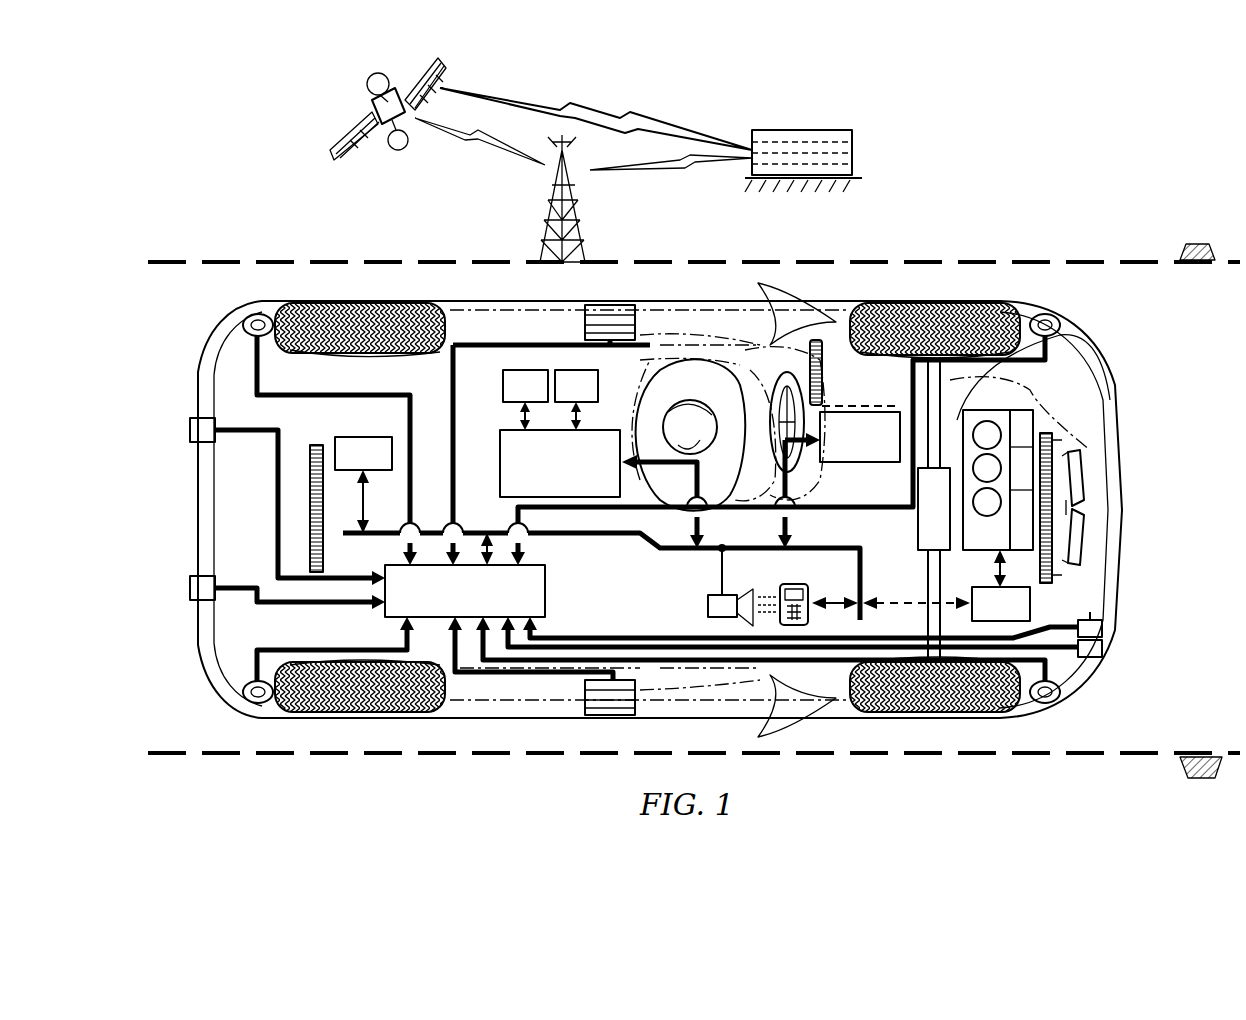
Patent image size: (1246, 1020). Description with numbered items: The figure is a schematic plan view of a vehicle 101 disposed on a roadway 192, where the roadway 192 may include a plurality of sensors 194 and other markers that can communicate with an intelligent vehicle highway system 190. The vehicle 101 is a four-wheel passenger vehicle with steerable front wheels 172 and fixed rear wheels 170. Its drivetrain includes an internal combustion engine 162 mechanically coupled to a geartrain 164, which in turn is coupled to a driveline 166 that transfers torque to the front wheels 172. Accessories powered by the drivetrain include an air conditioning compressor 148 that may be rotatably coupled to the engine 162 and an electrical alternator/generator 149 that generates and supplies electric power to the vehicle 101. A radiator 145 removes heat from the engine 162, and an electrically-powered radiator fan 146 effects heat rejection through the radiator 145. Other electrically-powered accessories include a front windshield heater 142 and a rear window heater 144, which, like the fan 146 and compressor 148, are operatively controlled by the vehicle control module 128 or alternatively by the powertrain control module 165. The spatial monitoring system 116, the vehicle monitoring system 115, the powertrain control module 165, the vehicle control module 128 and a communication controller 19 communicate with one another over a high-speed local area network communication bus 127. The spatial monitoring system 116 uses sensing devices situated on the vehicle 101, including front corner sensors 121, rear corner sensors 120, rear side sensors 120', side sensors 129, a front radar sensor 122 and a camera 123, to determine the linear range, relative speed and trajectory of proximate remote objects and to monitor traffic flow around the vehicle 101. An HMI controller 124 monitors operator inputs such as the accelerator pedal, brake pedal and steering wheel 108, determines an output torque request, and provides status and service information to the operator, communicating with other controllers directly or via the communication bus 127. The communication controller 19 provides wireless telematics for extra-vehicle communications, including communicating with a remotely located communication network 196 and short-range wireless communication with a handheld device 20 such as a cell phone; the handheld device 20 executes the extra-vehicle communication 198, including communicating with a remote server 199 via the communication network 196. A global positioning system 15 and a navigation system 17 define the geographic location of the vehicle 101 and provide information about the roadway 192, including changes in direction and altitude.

The global positioning system 15 is at (525, 400).
The navigation system 17 is at (576, 400).
The communication controller 19 is at (712, 597).
The handheld device 20 is at (808, 622).
The vehicle 101 is at (920, 290).
The steering wheel 108 is at (800, 462).
The vehicle monitoring system 115 is at (602, 489).
The spatial monitoring system 116 is at (731, 607).
The rear corner sensors 120 is at (238, 507).
The rear side sensors 120' is at (265, 515).
The front corner sensors 121 is at (1050, 316).
The front radar sensor 122 is at (1104, 648).
The camera 123 is at (1104, 628).
The HMI controller 124 is at (839, 477).
The communication bus 127 is at (582, 540).
The vehicle control module 128 is at (363, 485).
The side sensors 129 is at (615, 305).
The front windshield heater 142 is at (818, 338).
The rear window heater 144 is at (308, 445).
The radiator 145 is at (1052, 443).
The radiator fan 146 is at (1086, 500).
The air conditioning compressor 148 is at (957, 420).
The alternator/generator 149 is at (1020, 420).
The internal combustion engine 162 is at (1013, 523).
The geartrain 164 is at (983, 540).
The powertrain control module 165 is at (1001, 585).
The driveline 166 is at (935, 545).
The rear wheels 170 is at (292, 303).
The front wheels 172 is at (972, 303).
The intelligent vehicle highway system 190 is at (1108, 162).
The roadway 192 is at (694, 507).
The sensors 194 is at (1203, 247).
The communication network 196 is at (597, 100).
The extra-vehicle communication 198 is at (405, 127).
The remote server 199 is at (862, 134).